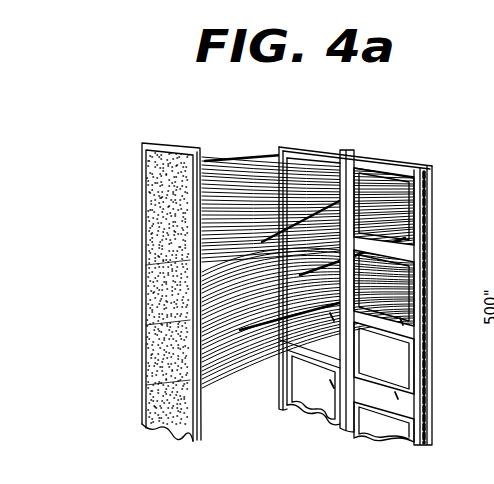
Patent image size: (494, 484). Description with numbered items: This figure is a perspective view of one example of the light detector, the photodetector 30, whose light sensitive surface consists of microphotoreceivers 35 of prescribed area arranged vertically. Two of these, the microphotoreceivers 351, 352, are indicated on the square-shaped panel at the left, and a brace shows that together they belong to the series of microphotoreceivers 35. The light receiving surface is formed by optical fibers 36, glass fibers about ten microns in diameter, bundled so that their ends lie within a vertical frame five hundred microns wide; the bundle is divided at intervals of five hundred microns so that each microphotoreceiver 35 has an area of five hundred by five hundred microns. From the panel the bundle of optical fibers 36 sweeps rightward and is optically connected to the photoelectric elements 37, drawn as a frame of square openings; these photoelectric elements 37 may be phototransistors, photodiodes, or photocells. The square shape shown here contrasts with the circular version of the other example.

The photodetector 30 is at (146, 127).
The microphotoreceiver 35 is at (86, 284).
The microphotoreceiver 351 is at (148, 173).
The microphotoreceiver 352 is at (148, 226).
The optical fibers 36 is at (237, 168).
The photoelectric elements 37 is at (405, 370).